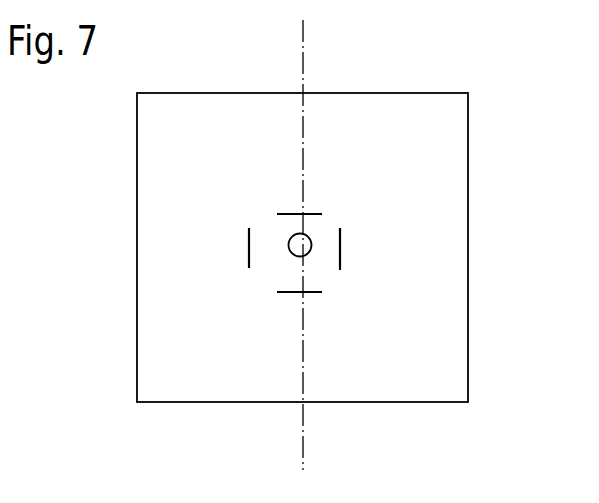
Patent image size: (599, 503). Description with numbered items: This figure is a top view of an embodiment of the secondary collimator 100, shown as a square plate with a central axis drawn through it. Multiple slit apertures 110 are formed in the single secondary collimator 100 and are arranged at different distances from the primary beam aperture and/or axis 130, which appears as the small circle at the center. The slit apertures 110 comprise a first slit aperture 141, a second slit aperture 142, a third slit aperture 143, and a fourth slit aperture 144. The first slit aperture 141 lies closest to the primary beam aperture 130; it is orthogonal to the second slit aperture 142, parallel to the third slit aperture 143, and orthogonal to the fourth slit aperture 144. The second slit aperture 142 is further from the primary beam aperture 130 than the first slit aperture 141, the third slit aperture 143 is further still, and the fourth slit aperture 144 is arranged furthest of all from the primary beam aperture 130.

The secondary collimator 100 is at (455, 88).
The slit apertures 110 is at (342, 296).
The primary beam aperture 130 is at (311, 239).
The first slit aperture 141 is at (286, 212).
The second slit aperture 142 is at (344, 248).
The third slit aperture 143 is at (297, 293).
The fourth slit aperture 144 is at (246, 242).